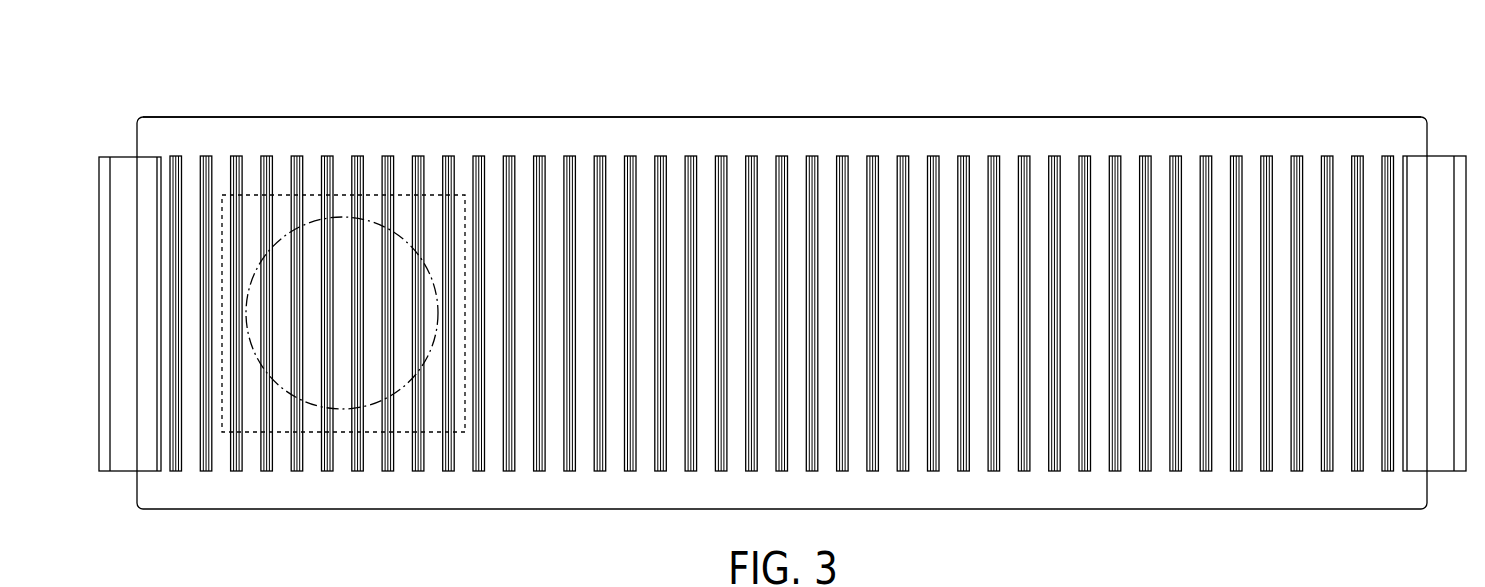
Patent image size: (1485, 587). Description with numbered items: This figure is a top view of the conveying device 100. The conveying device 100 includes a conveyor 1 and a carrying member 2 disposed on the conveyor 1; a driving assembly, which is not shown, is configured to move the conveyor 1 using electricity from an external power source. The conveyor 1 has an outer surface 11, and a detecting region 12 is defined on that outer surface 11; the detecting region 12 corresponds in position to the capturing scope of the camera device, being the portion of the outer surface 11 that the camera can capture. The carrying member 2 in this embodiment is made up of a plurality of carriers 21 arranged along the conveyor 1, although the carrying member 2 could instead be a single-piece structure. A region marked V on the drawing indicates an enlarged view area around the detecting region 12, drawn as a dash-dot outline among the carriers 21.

The conveying device 100 is at (1470, 68).
The conveyor 1 is at (1190, 117).
The outer surface 11 is at (613, 135).
The carrying member 2 is at (1082, 148).
The carrier 21 is at (298, 176).
The detecting region 12 is at (345, 215).
The viewing region V is at (402, 195).